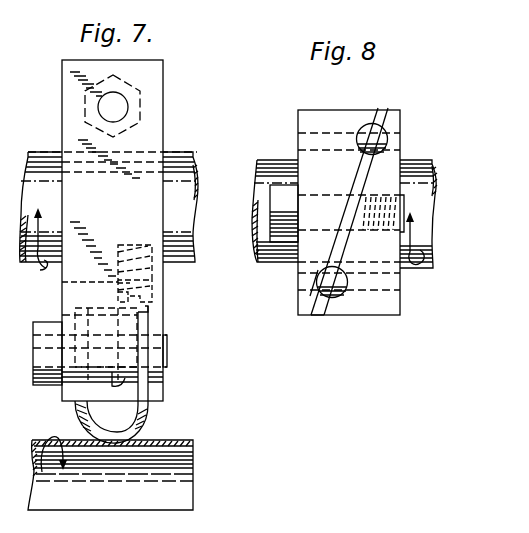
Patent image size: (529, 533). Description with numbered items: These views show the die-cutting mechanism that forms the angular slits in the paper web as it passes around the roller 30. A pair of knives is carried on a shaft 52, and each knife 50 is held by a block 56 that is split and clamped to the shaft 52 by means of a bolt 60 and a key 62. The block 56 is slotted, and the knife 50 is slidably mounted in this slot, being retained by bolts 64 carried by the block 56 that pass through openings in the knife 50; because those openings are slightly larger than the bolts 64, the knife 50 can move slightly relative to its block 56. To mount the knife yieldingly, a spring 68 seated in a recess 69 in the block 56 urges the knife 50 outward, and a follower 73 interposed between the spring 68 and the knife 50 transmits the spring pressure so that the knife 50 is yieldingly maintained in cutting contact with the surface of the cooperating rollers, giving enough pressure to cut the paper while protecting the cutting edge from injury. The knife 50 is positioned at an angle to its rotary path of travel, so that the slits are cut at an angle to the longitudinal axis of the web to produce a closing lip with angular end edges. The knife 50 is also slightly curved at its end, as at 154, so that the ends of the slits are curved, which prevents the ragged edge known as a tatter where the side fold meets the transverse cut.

In FIG. 7, the roller 30 is at (183, 483).
In FIG. 7, the knife 50 is at (145, 385).
In FIG. 8, the knife 50 is at (334, 306).
In FIG. 7, the shaft 52 is at (182, 201).
In FIG. 8, the shaft 52 is at (416, 166).
In FIG. 7, the block 56 is at (152, 130).
In FIG. 8, the block 56 is at (394, 307).
In FIG. 7, the bolt 60 is at (138, 97).
In FIG. 7, the key 62 is at (43, 156).
In FIG. 8, the key 62 is at (420, 213).
In FIG. 7, the bolt 64 is at (168, 349).
In FIG. 8, the bolt 64 is at (328, 135).
In FIG. 7, the spring 68 is at (116, 284).
In FIG. 7, the recess 69 is at (152, 249).
In FIG. 8, the recess 69 is at (390, 140).
In FIG. 7, the follower 73 is at (150, 291).
In FIG. 7, the curved portion of knife 154 is at (148, 417).
In FIG. 8, the curved portion of knife 154 is at (387, 110).